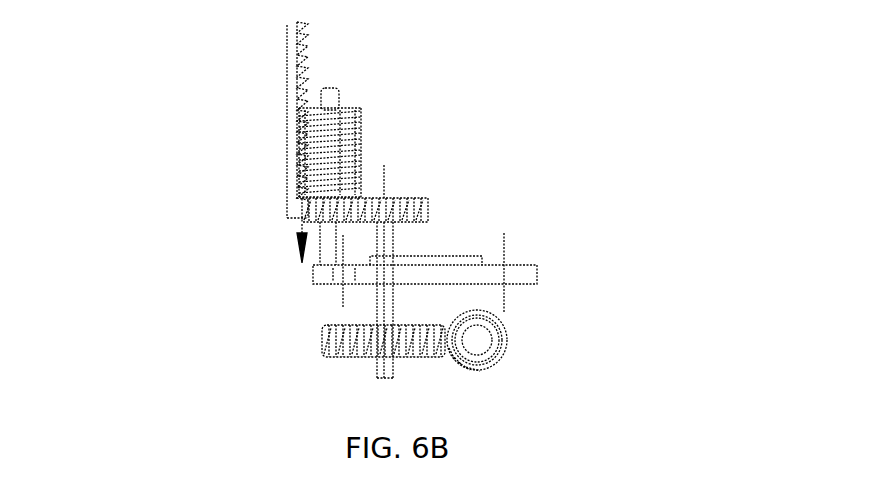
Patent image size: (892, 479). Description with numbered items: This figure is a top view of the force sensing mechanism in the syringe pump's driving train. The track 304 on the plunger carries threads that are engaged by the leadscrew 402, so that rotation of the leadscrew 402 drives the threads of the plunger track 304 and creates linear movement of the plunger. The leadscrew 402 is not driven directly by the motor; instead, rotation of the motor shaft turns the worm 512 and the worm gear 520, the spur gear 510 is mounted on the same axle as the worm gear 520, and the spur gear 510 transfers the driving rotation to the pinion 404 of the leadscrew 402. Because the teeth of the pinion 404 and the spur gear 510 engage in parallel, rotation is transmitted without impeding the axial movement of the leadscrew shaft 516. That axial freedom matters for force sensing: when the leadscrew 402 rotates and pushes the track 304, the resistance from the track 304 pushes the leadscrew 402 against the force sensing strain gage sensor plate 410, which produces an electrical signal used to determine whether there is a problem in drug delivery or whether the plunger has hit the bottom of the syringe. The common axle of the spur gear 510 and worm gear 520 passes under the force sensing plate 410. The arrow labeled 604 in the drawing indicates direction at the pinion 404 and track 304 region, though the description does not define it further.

The track 304 is at (287, 61).
The leadscrew shaft 516 is at (333, 97).
The leadscrew 402 is at (358, 133).
The pinion 404 is at (303, 201).
The spur gear 510 is at (418, 200).
The direction arrow 604 is at (293, 247).
The sensor plate 410 is at (482, 265).
The worm 512 is at (505, 333).
The worm gear 520 is at (415, 358).